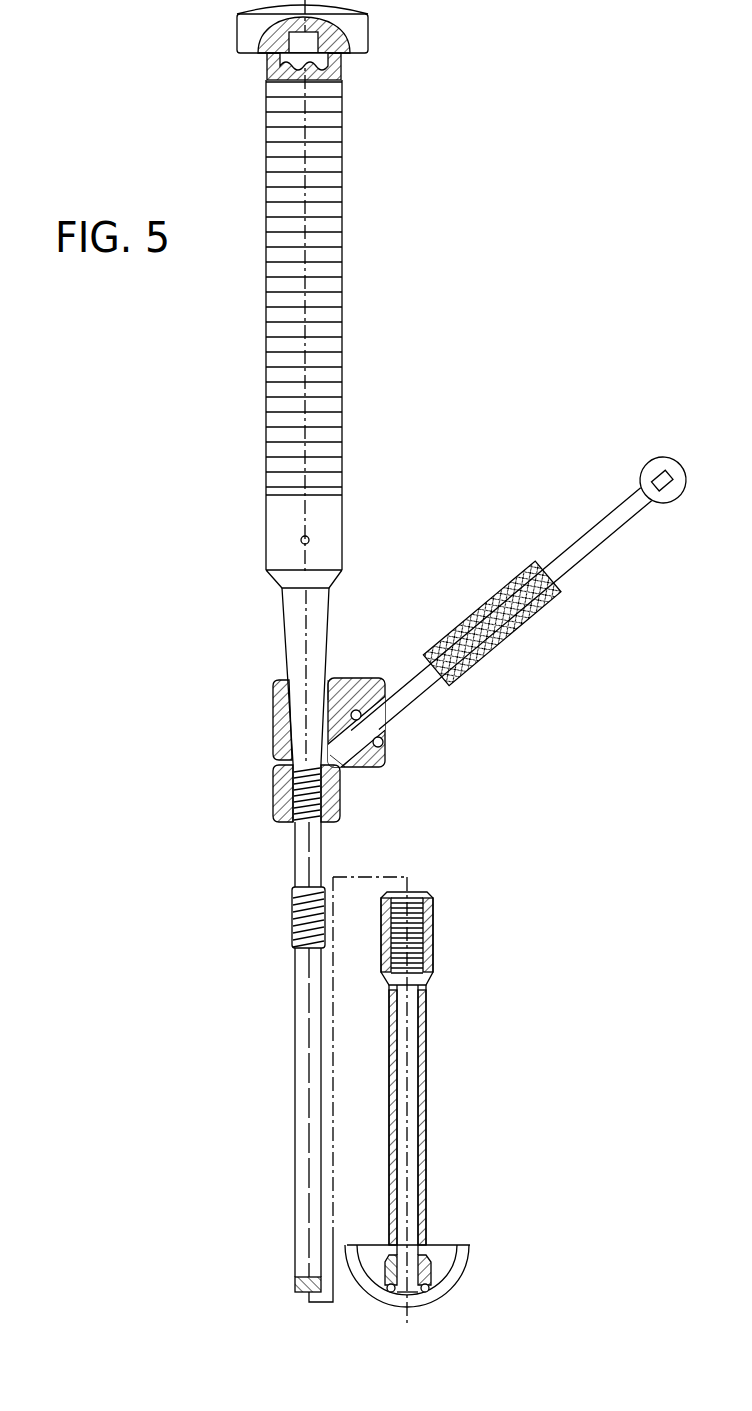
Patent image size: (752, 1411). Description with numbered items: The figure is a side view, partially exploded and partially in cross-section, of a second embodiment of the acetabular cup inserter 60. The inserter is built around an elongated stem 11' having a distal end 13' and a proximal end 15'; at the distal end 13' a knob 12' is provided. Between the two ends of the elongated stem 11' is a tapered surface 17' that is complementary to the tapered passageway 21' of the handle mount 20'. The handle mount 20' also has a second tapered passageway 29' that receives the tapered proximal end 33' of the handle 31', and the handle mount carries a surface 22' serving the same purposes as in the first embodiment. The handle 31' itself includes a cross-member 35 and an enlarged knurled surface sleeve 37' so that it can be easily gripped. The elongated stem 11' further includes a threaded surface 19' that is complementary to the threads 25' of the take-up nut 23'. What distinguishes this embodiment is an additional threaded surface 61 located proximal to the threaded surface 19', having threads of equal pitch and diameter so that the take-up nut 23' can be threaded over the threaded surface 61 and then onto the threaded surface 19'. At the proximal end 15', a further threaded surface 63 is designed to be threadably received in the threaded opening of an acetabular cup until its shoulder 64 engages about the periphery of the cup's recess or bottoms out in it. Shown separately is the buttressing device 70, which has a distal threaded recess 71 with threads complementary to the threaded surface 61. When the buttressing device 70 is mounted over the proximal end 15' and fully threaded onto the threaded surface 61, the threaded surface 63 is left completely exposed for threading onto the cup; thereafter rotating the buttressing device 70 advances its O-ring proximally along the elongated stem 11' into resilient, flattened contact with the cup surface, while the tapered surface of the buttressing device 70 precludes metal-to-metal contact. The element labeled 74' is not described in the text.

The knob 12' is at (254, 29).
The distal end 13' is at (381, 47).
The elongated stem 11' is at (246, 334).
The acetabular cup inserter 60 is at (216, 569).
The tapered surface 17' is at (236, 720).
The right clamp block 74' is at (368, 682).
The tapered passageway 21' is at (352, 651).
The tapered passageway 29' is at (389, 670).
The tapered proximal end 33' is at (403, 770).
The surface 22' is at (382, 791).
The handle mount 20' is at (436, 739).
The handle 31' is at (501, 616).
The enlarged knurled surface sleeve 37' is at (510, 623).
The cross-member 35 is at (648, 468).
The take-up nut 23' is at (245, 807).
The threaded surface 19' is at (292, 818).
The threads 25' is at (255, 792).
The proximal end 15' is at (255, 1049).
The threaded surface 61 is at (292, 922).
The threaded surface 63 is at (300, 1285).
The shoulder 64 is at (322, 1286).
The buttressing device 70 is at (440, 1099).
The distal threaded recess 71 is at (412, 956).